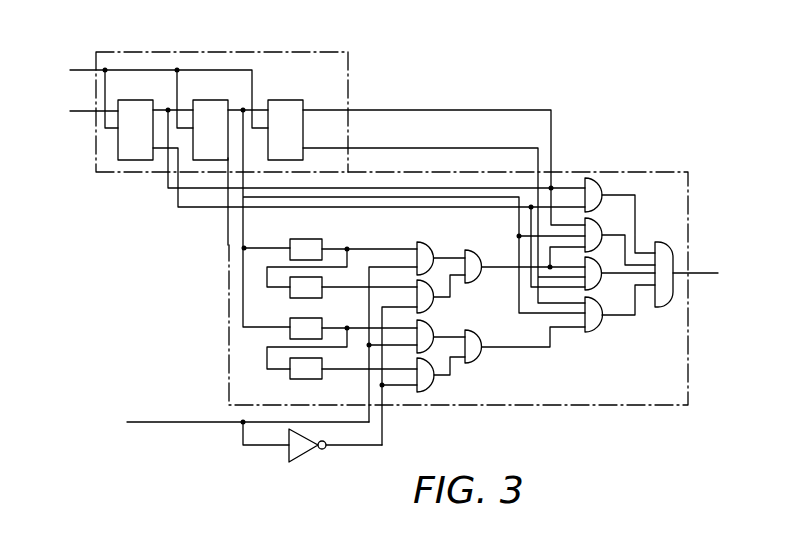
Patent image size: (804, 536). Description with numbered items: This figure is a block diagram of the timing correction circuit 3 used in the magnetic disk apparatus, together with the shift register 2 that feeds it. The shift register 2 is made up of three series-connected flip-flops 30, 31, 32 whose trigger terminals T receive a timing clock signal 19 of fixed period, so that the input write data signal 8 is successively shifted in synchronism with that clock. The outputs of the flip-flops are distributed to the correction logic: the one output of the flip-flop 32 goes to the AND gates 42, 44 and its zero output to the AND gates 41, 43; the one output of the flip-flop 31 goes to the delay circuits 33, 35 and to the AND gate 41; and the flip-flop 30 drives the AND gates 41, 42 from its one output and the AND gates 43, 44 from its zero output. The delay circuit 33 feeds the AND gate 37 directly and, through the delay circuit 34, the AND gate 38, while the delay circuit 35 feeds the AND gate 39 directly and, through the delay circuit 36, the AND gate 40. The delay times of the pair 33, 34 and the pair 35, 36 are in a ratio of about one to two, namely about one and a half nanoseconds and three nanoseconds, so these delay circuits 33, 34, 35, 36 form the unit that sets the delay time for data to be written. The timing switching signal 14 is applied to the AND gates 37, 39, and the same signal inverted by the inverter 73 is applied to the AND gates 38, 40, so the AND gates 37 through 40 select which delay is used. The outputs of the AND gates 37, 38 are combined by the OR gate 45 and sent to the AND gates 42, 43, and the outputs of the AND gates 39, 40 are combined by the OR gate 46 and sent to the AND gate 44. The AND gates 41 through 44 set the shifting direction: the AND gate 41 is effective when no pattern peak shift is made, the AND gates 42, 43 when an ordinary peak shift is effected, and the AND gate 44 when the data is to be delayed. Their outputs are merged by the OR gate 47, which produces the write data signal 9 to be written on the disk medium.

The shift register 2 is at (318, 52).
The timing correction circuit 3 is at (597, 172).
The input write data signal 8 is at (89, 111).
The write data signal 9 is at (693, 273).
The timing switching signal 14 is at (172, 422).
The timing clock signal 19 is at (83, 70).
The flip-flop 30 is at (278, 92).
The flip-flop 31 is at (203, 92).
The flip-flop 32 is at (128, 92).
The delay circuit 33 is at (304, 239).
The delay circuit 34 is at (324, 298).
The delay circuit 35 is at (284, 337).
The delay circuit 36 is at (322, 379).
The AND gate 37 is at (445, 241).
The AND gate 38 is at (435, 302).
The AND gate 39 is at (431, 336).
The AND gate 40 is at (431, 389).
The AND gate 41 is at (607, 182).
The AND gate 42 is at (601, 240).
The AND gate 43 is at (601, 280).
The AND gate 44 is at (599, 322).
The OR gate 45 is at (479, 262).
The OR gate 46 is at (480, 349).
The OR gate 47 is at (668, 225).
The inverter 73 is at (300, 462).